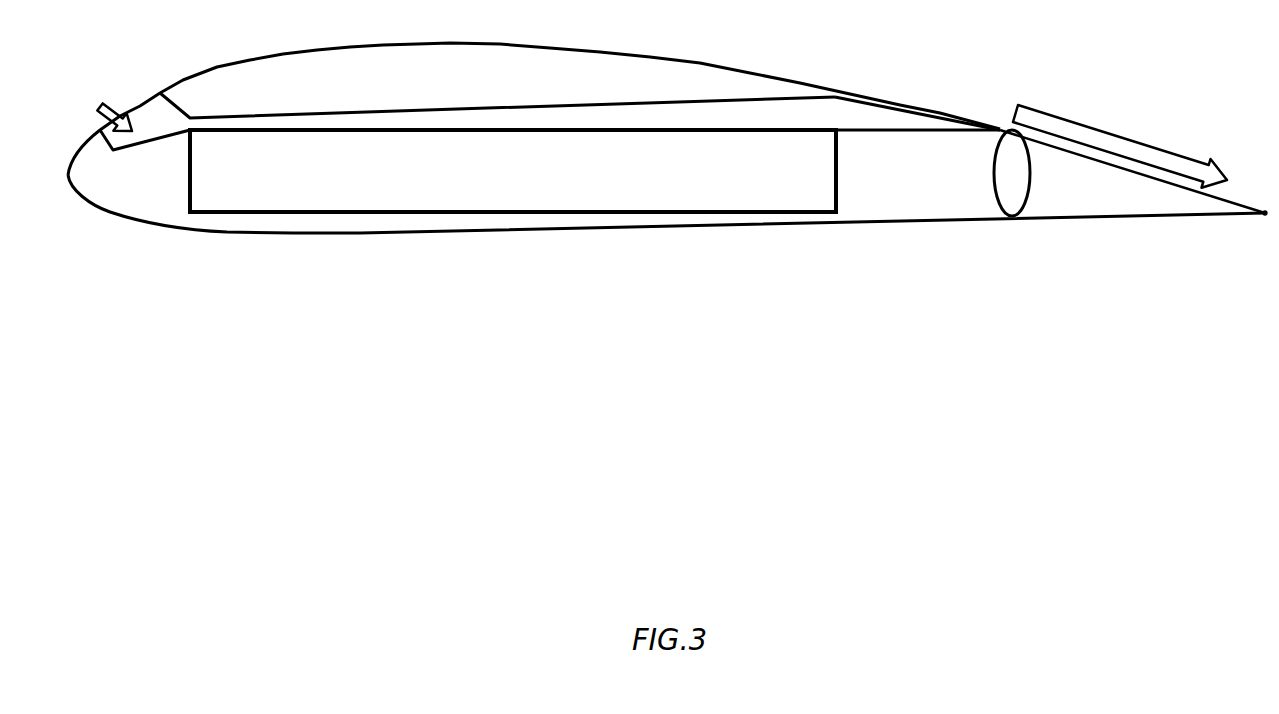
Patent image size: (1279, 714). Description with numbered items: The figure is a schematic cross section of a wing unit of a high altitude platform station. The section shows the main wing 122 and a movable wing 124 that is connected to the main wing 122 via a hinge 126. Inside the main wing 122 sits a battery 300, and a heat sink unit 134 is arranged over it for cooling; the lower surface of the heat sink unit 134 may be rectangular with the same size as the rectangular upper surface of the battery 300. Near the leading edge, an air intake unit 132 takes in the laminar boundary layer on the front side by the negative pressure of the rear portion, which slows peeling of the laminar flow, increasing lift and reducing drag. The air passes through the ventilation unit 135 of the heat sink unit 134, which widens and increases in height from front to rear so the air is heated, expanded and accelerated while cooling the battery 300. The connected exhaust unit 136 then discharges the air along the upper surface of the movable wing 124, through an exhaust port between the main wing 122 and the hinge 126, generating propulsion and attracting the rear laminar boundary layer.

The main wing 122 is at (535, 232).
The movable wing 124 is at (1097, 215).
The hinge 126 is at (1010, 208).
The air intake unit 132 is at (148, 112).
The heat sink unit 134 is at (458, 110).
The ventilation unit 135 is at (763, 127).
The exhaust unit 136 is at (882, 112).
The battery 300 is at (247, 174).